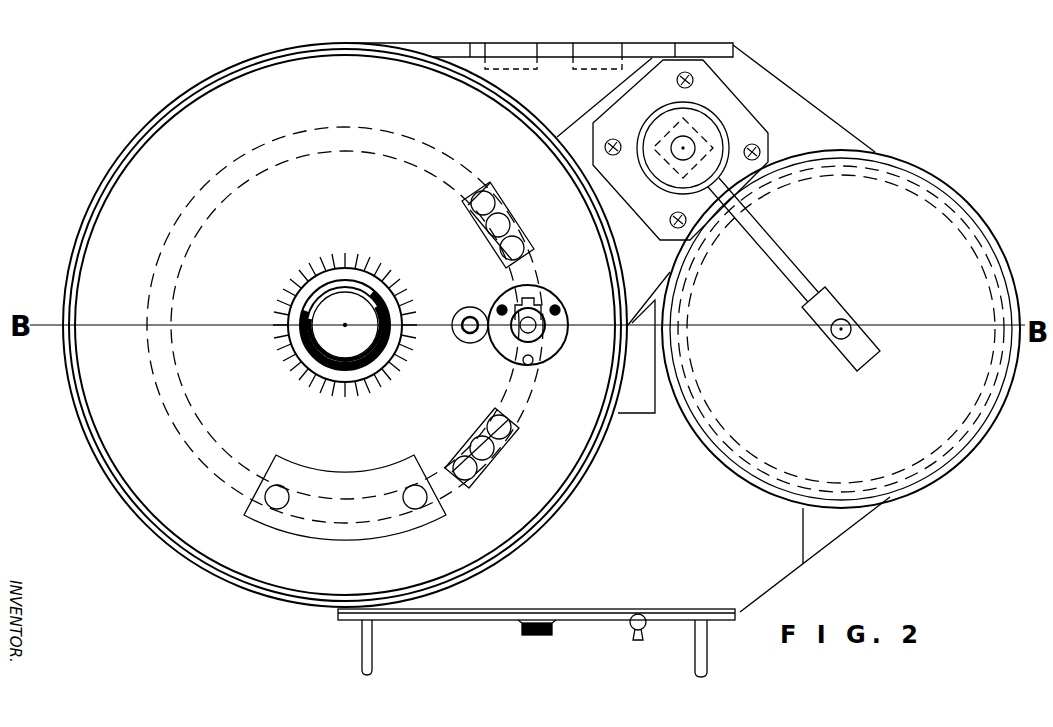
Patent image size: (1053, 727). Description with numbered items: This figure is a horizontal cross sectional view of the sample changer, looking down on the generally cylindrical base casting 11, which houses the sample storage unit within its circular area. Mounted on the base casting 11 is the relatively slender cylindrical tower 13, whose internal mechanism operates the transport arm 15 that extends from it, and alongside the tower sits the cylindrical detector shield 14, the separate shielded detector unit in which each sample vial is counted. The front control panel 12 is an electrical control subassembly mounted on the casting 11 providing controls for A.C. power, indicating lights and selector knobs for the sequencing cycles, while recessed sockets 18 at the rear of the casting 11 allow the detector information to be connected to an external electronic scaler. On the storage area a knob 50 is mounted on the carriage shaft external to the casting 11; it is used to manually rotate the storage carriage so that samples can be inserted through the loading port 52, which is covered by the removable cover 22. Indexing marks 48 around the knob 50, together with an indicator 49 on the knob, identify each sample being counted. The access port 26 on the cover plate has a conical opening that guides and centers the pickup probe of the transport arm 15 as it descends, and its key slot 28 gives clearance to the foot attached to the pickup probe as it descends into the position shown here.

The base casting 11 is at (265, 598).
The front control panel 12 is at (604, 622).
The cylindrical tower 13 is at (713, 115).
The detector shield 14 is at (1002, 406).
The transport arm 15 is at (812, 277).
The recessed sockets 18 is at (507, 50).
The removable cover 22 is at (398, 528).
The access port 26 is at (547, 345).
The key slot 28 is at (538, 295).
The indexing marks 48 is at (358, 265).
The indicator 49 is at (368, 380).
The knob 50 is at (388, 373).
The loading port 52 is at (318, 480).